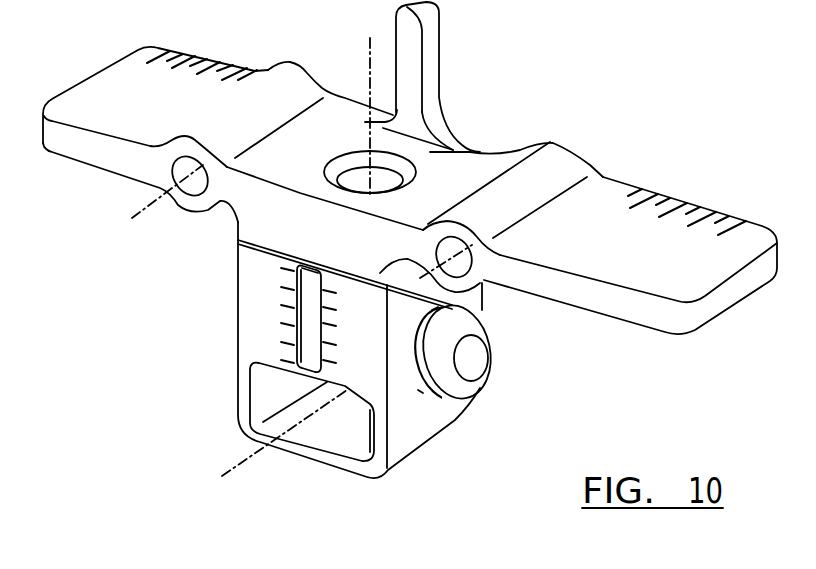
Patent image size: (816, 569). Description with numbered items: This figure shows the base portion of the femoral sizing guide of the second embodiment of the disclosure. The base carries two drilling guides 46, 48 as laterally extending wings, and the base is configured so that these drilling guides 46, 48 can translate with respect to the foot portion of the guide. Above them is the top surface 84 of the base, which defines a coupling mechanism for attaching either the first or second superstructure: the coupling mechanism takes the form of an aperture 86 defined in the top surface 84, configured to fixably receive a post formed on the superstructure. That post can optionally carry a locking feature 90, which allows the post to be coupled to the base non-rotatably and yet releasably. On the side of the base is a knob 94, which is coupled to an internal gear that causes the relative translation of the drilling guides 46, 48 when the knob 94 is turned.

The drilling guide 46 is at (205, 183).
The drilling guide 48 is at (563, 165).
The top surface 84 is at (495, 165).
The aperture 86 is at (474, 153).
The locking feature 90 is at (337, 430).
The knob 94 is at (479, 355).